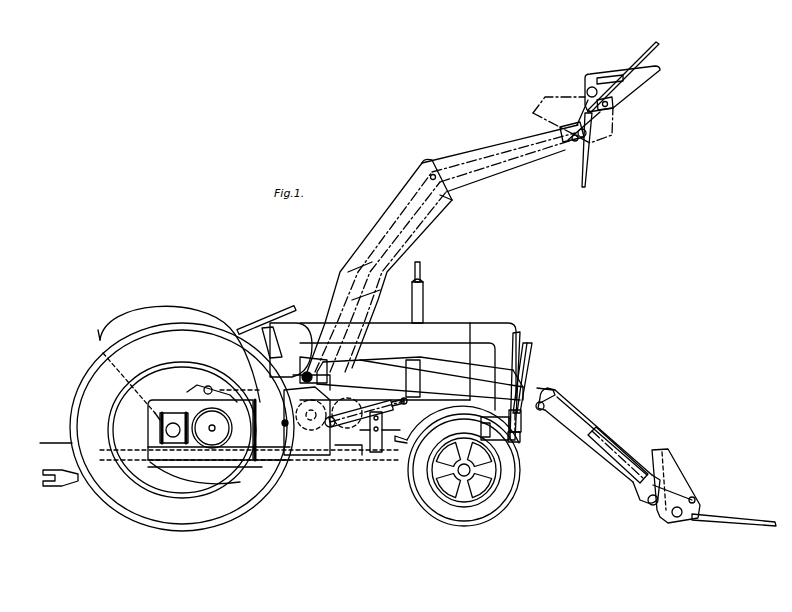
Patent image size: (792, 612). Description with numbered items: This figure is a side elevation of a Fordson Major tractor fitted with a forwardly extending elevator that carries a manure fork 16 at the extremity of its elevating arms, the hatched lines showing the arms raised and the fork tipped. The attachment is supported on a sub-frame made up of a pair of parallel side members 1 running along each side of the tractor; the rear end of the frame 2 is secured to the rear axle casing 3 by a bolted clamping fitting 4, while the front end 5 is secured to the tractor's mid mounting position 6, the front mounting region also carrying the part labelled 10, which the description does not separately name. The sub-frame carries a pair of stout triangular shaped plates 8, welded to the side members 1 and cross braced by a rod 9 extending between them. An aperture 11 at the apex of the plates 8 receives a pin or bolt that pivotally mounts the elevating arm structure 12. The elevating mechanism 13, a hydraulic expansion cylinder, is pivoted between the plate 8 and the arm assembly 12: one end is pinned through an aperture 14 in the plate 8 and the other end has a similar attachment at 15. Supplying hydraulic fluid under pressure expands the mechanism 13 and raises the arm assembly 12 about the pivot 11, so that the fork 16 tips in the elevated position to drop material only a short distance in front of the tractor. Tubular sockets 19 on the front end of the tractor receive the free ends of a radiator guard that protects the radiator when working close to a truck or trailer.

The side members 1 is at (356, 458).
The rear end of the frame 2 is at (173, 462).
The rear axle casing 3 is at (160, 430).
The bolted clamping fitting 4 is at (380, 452).
The front end 5 is at (157, 418).
The mid mounting position 6 is at (383, 422).
The triangular shaped plates 8 is at (307, 440).
The cross bracing rod 9 is at (348, 448).
The front mounting bracket 10 is at (522, 428).
The aperture 11 is at (303, 367).
The elevating arm structure 12 is at (370, 228).
The elevating mechanism 13 is at (366, 409).
The aperture 14 is at (537, 350).
The attachment 15 is at (406, 399).
The fork 16 is at (632, 102).
The tubular sockets 19 is at (523, 418).